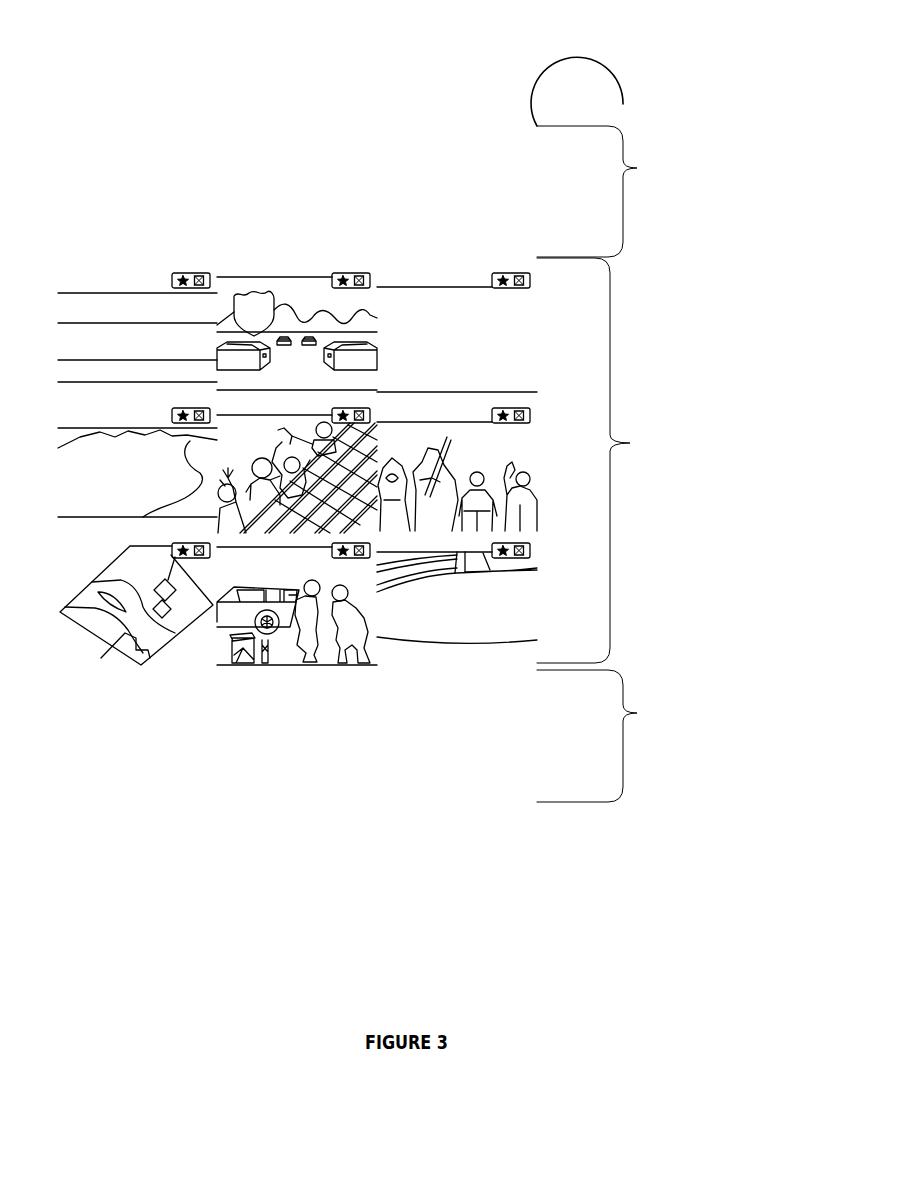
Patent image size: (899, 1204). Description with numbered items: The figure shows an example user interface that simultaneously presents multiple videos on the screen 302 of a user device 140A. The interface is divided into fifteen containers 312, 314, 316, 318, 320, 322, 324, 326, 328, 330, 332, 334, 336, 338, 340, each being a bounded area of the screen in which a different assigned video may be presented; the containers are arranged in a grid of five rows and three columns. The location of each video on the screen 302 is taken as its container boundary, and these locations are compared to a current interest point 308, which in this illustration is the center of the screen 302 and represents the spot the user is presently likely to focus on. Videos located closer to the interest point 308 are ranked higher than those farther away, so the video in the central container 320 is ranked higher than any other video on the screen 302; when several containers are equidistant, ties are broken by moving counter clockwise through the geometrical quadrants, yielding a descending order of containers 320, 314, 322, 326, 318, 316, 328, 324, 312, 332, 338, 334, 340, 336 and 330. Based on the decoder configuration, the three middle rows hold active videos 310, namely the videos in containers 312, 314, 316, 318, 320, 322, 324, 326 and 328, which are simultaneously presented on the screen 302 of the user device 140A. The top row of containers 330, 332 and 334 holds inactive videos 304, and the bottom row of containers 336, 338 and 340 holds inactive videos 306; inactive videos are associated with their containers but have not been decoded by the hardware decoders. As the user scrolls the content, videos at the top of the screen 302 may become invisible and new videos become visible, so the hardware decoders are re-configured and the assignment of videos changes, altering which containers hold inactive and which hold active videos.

The user device 140A is at (240, 81).
The screen 302 is at (638, 91).
The inactive videos 304 is at (646, 191).
The inactive videos 306 is at (646, 736).
The interest point 308 is at (305, 460).
The active videos 310 is at (653, 460).
The container 312 is at (94, 291).
The container 314 is at (311, 375).
The container 316 is at (433, 314).
The container 318 is at (100, 508).
The container 320 is at (260, 445).
The container 322 is at (406, 445).
The container 324 is at (100, 562).
The container 326 is at (260, 575).
The container 328 is at (506, 634).
The container 330 is at (94, 165).
The container 332 is at (259, 165).
The container 334 is at (411, 165).
The container 336 is at (100, 697).
The container 338 is at (264, 697).
The container 340 is at (433, 697).